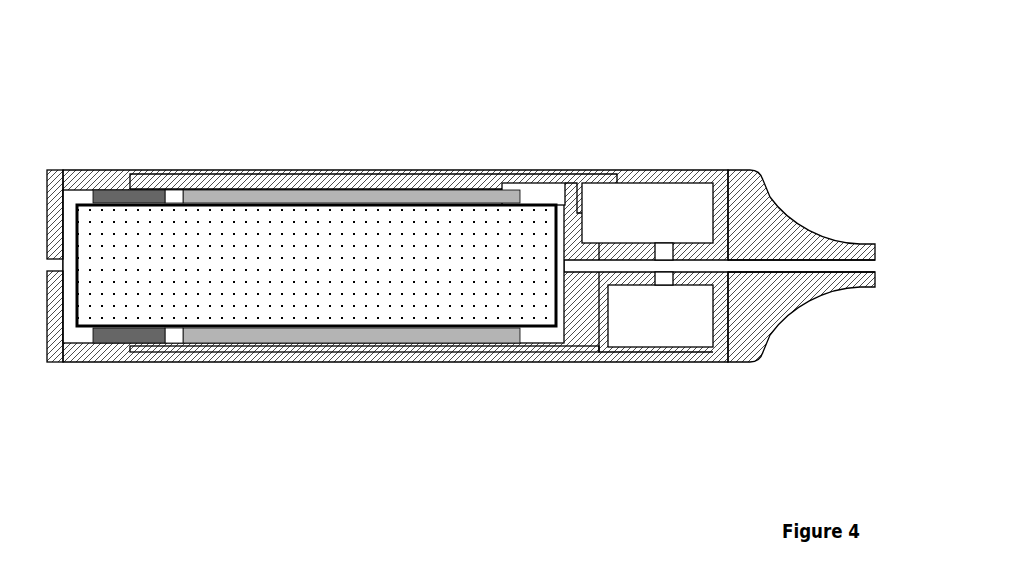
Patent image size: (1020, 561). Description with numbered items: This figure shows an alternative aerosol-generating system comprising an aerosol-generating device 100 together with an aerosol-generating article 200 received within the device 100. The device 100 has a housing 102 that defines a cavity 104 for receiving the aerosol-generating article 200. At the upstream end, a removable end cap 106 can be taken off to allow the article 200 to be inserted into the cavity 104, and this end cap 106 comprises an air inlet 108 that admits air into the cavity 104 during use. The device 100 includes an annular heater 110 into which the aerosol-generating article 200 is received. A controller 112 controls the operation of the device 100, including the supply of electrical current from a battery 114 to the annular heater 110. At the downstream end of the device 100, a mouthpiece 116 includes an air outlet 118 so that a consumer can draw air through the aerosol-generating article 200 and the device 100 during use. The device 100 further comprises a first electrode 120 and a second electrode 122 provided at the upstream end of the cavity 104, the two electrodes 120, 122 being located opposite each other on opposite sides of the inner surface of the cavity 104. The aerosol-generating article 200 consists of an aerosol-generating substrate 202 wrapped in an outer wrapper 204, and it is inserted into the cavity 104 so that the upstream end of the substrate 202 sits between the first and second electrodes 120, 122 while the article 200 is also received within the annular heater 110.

The aerosol-generating device 100 is at (461, 279).
The housing 102 is at (640, 355).
The cavity 104 is at (540, 335).
The removable end cap 106 is at (53, 212).
The air inlet 108 is at (55, 265).
The annular heater 110 is at (375, 197).
The controller 112 is at (647, 213).
The battery 114 is at (660, 316).
The mouthpiece 116 is at (760, 208).
The air outlet 118 is at (870, 265).
The first electrode 120 is at (118, 337).
The second electrode 122 is at (115, 195).
The aerosol-generating article 200 is at (316, 304).
The aerosol-generating substrate 202 is at (257, 245).
The outer wrapper 204 is at (545, 200).